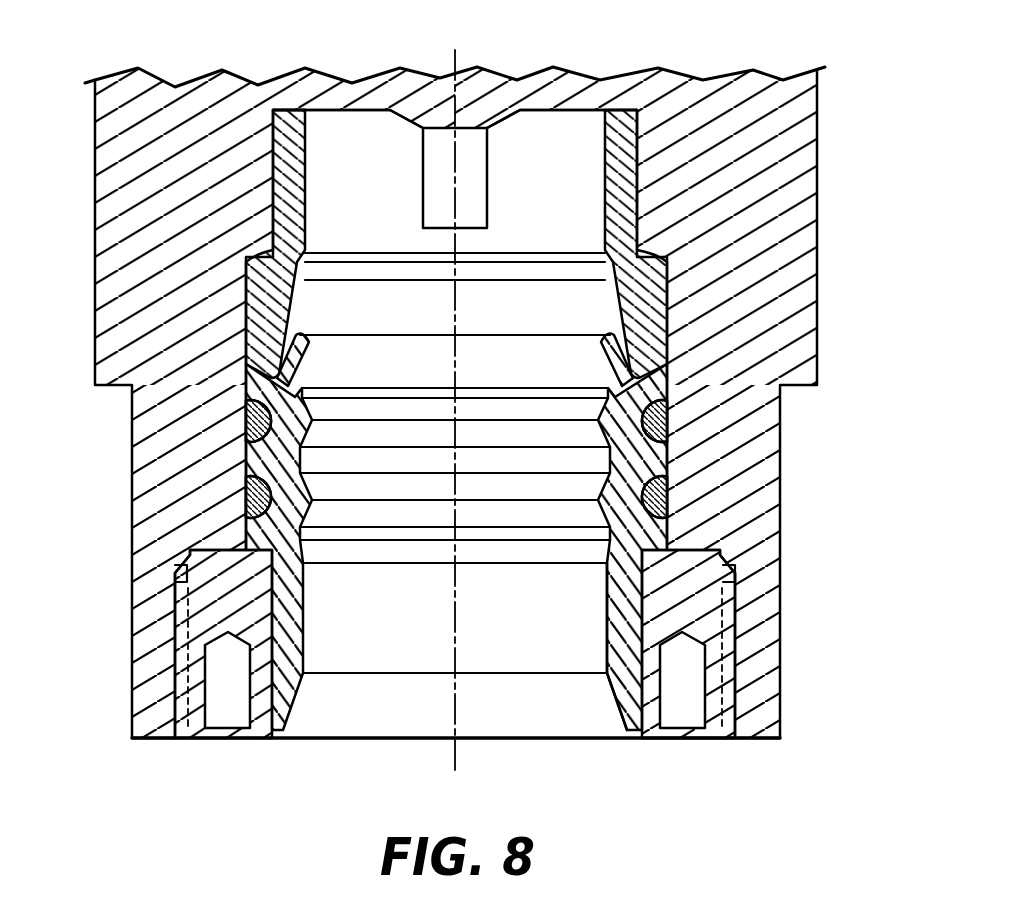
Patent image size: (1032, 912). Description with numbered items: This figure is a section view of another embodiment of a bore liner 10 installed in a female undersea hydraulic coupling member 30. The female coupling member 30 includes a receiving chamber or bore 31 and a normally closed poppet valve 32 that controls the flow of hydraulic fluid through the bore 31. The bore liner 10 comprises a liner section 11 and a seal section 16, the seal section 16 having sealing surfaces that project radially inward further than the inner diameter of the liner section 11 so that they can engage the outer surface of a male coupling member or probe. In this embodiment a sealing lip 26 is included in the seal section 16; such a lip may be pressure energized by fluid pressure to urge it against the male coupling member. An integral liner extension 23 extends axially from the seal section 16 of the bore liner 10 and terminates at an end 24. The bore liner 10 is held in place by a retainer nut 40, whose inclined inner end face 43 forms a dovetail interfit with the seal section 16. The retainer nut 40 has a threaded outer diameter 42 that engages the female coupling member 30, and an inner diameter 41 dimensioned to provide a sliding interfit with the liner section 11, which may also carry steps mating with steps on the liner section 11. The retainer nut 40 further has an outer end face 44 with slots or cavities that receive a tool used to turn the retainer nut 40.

The bore liner 10 is at (676, 463).
The liner section 11 is at (308, 612).
The seal section 16 is at (250, 460).
The integral liner extension 23 is at (303, 190).
The end 24 is at (288, 112).
The sealing lip 26 is at (606, 344).
The female undersea hydraulic coupling member 30 is at (790, 245).
The receiving chamber or bore 31 is at (566, 126).
The normally closed poppet valve 32 is at (472, 205).
The retainer nut 40 is at (740, 558).
The inner diameter 41 is at (633, 612).
The threaded outer diameter 42 is at (735, 693).
The inclined inner end face 43 is at (186, 558).
The outer end face 44 is at (707, 740).